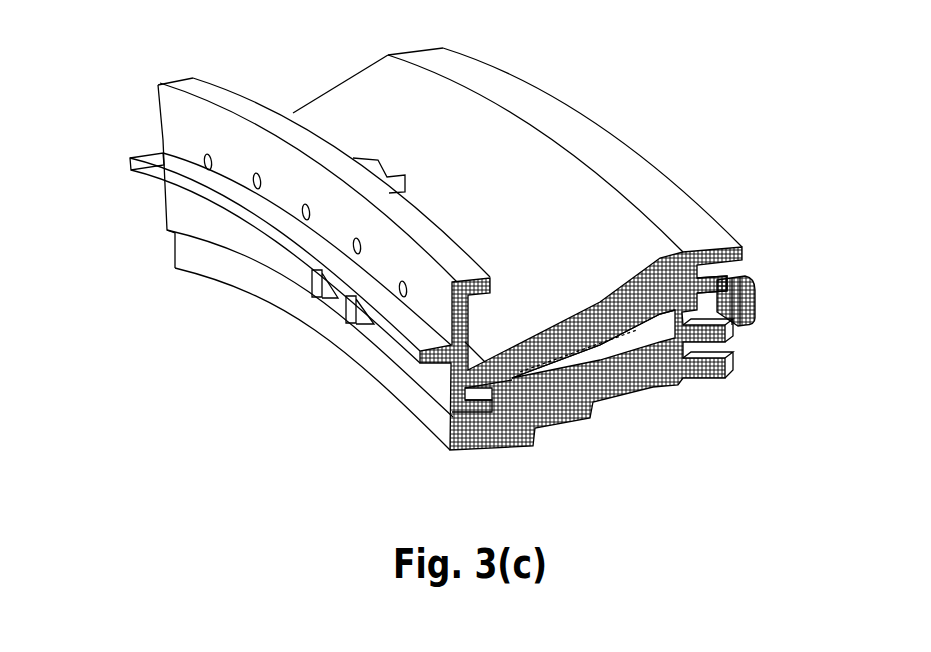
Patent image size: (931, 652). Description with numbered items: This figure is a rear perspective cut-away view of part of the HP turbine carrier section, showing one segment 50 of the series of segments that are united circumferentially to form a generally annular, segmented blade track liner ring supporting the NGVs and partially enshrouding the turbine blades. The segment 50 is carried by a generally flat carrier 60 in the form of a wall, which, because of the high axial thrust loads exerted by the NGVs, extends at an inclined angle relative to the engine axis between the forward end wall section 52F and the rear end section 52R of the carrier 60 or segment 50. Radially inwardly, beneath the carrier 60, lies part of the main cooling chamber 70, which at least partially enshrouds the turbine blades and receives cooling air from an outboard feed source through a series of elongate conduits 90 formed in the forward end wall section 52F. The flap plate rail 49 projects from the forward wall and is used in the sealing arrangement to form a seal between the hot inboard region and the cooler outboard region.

The flap plate rail 49 is at (187, 177).
The segment 50 is at (620, 403).
The forward end wall section 52F is at (172, 138).
The rear end section 52R is at (687, 298).
The carrier 60 is at (547, 190).
The main cooling chamber 70 is at (620, 336).
The elongate conduits 90 is at (303, 213).